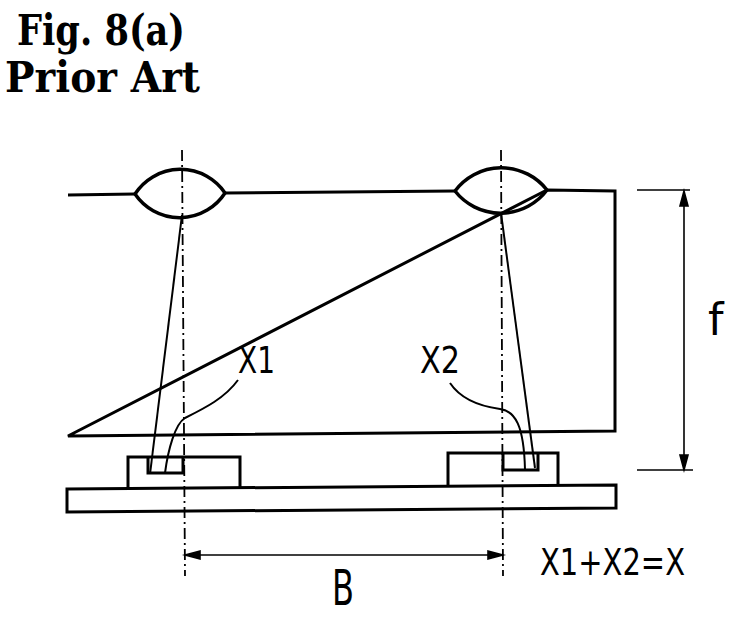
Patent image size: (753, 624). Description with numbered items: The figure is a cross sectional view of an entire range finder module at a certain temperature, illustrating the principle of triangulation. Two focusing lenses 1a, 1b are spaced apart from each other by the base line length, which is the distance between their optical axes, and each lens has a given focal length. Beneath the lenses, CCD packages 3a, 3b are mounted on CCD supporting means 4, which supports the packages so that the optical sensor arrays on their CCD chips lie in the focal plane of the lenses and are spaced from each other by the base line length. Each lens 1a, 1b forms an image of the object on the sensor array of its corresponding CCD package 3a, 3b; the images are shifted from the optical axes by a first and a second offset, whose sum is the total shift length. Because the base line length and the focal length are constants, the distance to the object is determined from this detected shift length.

The focusing lens 1a is at (157, 190).
The focusing lens 1b is at (525, 187).
The CCD package 3a is at (227, 477).
The CCD package 3b is at (548, 467).
The CCD supporting means 4 is at (613, 496).